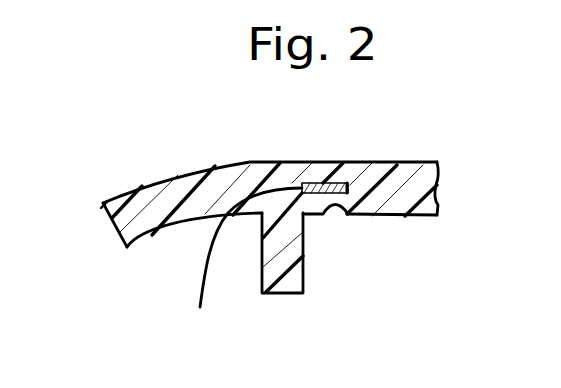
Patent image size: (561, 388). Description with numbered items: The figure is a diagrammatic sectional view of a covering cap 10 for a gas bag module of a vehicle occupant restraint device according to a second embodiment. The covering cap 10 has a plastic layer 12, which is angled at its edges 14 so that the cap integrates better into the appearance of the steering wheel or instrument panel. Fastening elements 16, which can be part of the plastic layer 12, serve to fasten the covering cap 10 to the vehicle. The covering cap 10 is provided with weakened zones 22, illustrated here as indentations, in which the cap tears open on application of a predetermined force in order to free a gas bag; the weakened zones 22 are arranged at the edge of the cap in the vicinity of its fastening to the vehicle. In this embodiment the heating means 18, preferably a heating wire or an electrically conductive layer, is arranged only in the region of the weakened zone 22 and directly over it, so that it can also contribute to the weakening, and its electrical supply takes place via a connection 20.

The covering cap 10 is at (252, 142).
The plastic layer 12 is at (428, 182).
The edges 14 is at (102, 211).
The fastening elements 16 is at (299, 290).
The heating means 18 is at (330, 182).
The connection 20 is at (201, 289).
The weakened zones 22 is at (330, 213).